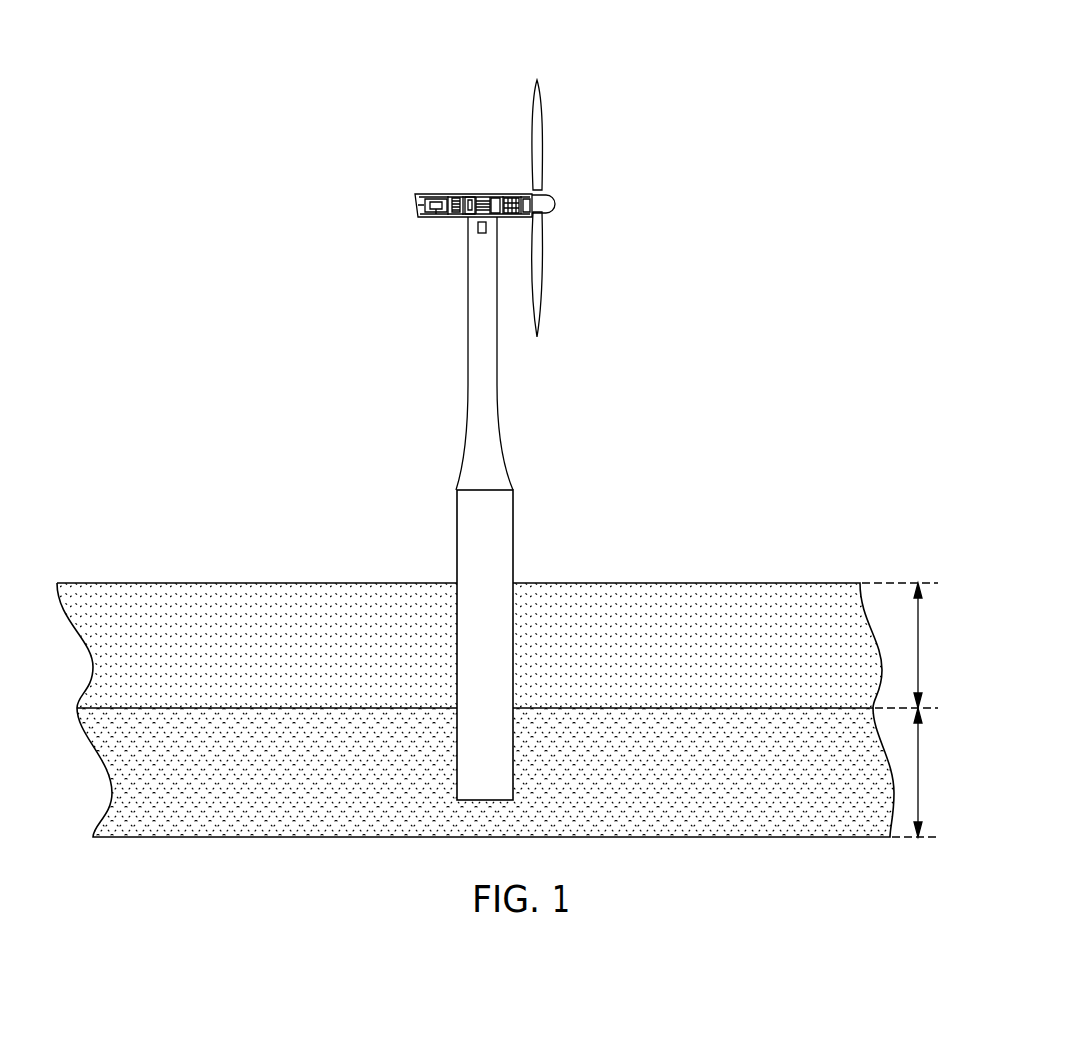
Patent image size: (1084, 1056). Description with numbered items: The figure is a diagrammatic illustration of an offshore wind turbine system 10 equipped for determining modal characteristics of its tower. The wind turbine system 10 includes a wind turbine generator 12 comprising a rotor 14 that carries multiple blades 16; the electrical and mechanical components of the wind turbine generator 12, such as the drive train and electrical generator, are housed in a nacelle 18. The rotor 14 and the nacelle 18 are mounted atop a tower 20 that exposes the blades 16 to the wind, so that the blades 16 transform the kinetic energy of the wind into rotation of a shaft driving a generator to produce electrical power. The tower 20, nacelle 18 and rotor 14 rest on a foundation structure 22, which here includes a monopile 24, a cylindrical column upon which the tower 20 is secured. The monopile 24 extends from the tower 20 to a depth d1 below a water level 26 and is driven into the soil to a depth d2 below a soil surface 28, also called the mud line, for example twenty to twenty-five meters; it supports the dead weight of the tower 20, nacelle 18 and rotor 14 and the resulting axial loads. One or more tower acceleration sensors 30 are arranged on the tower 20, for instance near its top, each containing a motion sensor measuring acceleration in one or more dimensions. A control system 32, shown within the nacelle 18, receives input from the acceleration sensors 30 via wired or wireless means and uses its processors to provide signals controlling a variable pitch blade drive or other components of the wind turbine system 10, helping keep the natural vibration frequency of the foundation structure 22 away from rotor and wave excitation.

The offshore wind turbine system 10 is at (345, 80).
The wind turbine generator 12 is at (615, 156).
The rotor 14 is at (556, 204).
The blades 16 is at (543, 105).
The nacelle 18 is at (433, 193).
The tower 20 is at (498, 366).
The foundation structure 22 is at (370, 525).
The monopile 24 is at (515, 555).
The water level 26 is at (700, 581).
The soil surface 28 is at (90, 703).
The tower acceleration sensors 30 is at (468, 224).
The control system 32 is at (453, 196).
The depth below water level d1 is at (920, 653).
The depth below soil surface d2 is at (920, 769).